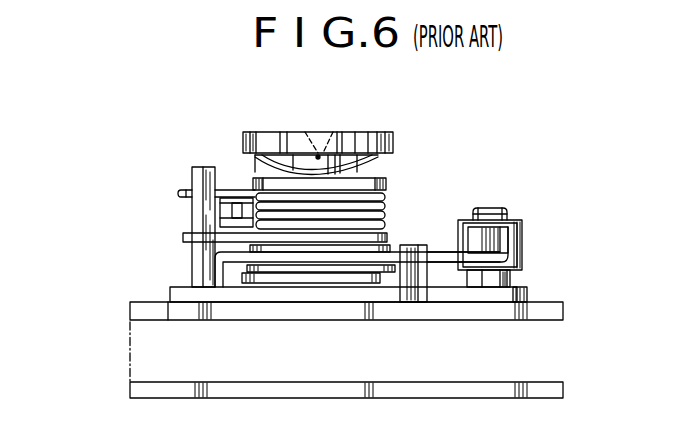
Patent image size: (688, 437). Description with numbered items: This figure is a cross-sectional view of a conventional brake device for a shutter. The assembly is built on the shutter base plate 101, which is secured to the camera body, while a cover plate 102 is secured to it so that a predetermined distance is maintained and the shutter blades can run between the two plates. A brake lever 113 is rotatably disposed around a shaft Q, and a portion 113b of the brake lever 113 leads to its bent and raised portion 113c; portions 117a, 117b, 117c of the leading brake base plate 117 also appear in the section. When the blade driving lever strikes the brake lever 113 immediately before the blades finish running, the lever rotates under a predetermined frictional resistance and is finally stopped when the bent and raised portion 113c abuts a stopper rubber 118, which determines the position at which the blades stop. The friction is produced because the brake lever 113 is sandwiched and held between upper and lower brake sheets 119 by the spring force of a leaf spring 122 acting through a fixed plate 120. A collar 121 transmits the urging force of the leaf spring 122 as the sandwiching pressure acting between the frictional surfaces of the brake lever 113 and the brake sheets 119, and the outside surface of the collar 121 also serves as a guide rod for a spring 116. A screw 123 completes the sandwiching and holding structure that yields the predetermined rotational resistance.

The shutter base plate 101 is at (143, 310).
The cover plate 102 is at (143, 390).
The brake lever 113 is at (227, 257).
The yoke arm 113b is at (445, 252).
The bent and raised portion 113c is at (502, 240).
The spring 116 is at (178, 193).
The leading brake base plate 117 is at (518, 293).
The frame post 117a is at (192, 177).
The frame post 117b is at (410, 245).
The frame projection 117c is at (488, 207).
The stopper rubber 118 is at (522, 230).
The brake sheets 119 is at (328, 245).
The fixed plate 120 is at (183, 238).
The collar 121 is at (253, 181).
The leaf spring 122 is at (277, 170).
The screw 123 is at (358, 133).
The shaft Q is at (330, 155).